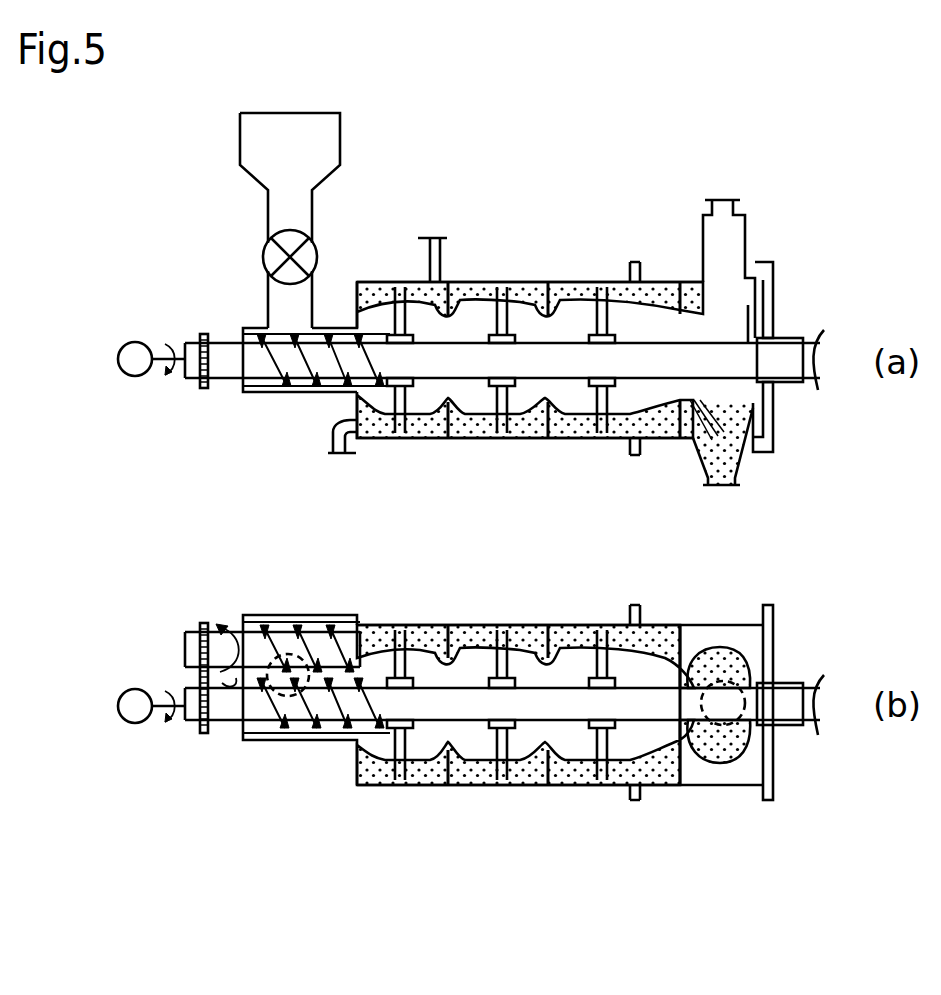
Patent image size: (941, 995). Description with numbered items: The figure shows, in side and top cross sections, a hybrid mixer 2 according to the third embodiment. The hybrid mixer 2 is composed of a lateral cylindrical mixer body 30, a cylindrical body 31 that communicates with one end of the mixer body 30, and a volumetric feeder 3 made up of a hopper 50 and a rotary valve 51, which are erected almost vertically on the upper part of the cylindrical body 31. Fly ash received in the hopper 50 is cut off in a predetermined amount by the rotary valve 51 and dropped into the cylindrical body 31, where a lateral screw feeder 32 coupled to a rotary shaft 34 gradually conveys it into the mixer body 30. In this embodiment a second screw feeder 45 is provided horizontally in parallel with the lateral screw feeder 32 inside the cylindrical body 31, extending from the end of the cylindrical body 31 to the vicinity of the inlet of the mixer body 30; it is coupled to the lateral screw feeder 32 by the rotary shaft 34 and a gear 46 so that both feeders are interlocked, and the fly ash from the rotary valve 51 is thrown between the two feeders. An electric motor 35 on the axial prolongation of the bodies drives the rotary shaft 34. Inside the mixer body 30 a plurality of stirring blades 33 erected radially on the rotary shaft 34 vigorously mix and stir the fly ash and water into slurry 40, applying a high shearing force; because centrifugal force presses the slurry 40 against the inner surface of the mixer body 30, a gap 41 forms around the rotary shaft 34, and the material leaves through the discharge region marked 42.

The hybrid mixer 2 is at (600, 158).
The volumetric feeder 3 is at (135, 172).
The mixer body 30 is at (518, 282).
The cylindrical body 31 is at (246, 396).
The lateral screw feeder 32 is at (300, 396).
The stirring blades 33 is at (495, 400).
The rotary shaft 34 is at (572, 340).
The electric motor 35 is at (133, 380).
The slurry 40 is at (430, 437).
The gap 41 is at (380, 317).
The discharge port 42 is at (745, 233).
The second screw feeder 45 is at (331, 618).
The gear 46 is at (201, 390).
The hopper 50 is at (240, 150).
The rotary valve 51 is at (263, 256).